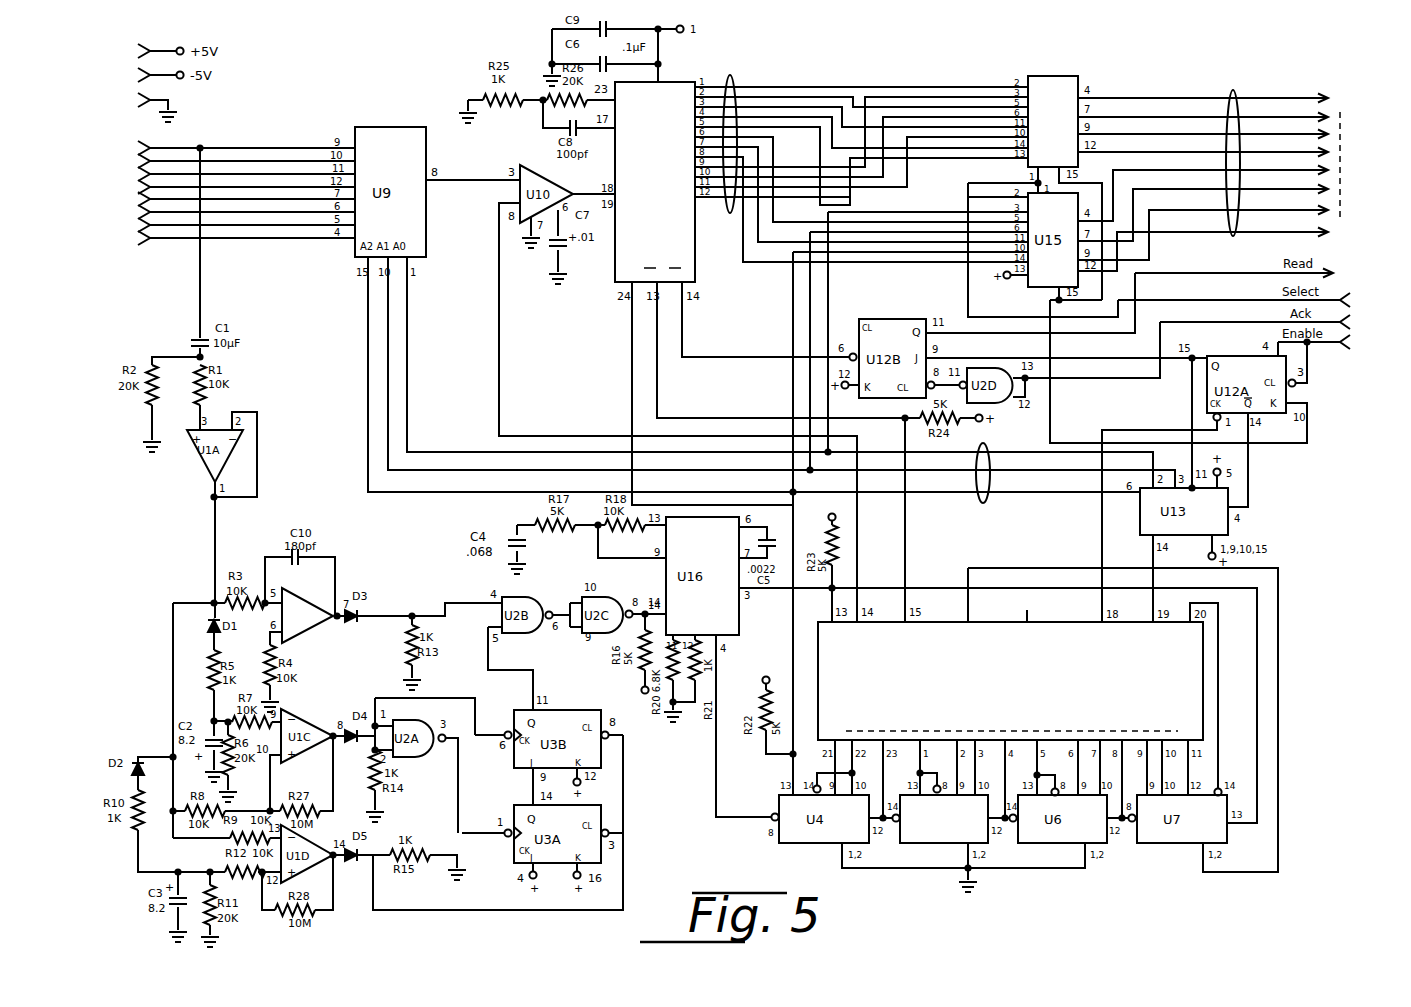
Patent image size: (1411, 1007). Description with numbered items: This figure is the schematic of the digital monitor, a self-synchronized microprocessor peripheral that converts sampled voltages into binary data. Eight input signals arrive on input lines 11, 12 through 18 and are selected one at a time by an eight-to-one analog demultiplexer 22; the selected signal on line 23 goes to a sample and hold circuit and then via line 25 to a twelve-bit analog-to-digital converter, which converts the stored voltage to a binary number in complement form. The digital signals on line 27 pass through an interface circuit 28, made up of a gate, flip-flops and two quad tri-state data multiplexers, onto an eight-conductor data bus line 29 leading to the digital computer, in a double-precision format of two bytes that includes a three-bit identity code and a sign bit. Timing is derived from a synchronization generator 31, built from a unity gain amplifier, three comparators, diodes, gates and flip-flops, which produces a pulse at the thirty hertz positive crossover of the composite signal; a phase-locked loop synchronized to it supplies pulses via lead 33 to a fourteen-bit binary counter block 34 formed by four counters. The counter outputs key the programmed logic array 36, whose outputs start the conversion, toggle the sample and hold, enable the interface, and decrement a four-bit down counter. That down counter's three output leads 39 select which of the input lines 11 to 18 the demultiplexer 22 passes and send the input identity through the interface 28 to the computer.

The input line 11 is at (148, 146).
The input line 12 is at (148, 162).
The input line 18 is at (148, 240).
The demultiplexer 22 is at (655, 172).
The line 23 is at (450, 184).
The line 25 is at (594, 180).
The line 27 is at (738, 80).
The interface circuit 28 is at (1060, 62).
The eight-conductor line 29 is at (1240, 95).
The synchronization generator 31 is at (425, 555).
The lead 33 is at (716, 790).
The counter block 34 is at (1016, 903).
The decoder U8 36 is at (818, 676).
The three leads 39 is at (988, 500).